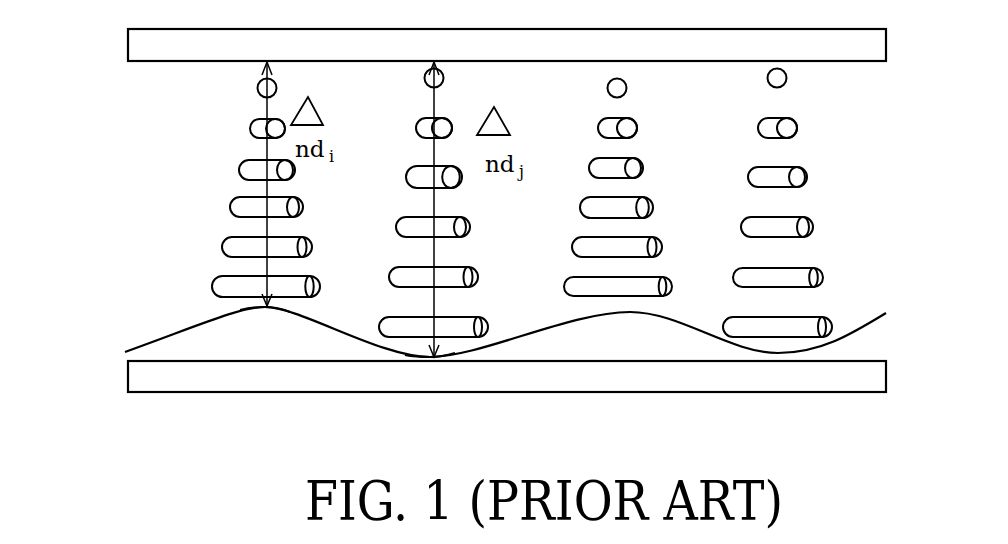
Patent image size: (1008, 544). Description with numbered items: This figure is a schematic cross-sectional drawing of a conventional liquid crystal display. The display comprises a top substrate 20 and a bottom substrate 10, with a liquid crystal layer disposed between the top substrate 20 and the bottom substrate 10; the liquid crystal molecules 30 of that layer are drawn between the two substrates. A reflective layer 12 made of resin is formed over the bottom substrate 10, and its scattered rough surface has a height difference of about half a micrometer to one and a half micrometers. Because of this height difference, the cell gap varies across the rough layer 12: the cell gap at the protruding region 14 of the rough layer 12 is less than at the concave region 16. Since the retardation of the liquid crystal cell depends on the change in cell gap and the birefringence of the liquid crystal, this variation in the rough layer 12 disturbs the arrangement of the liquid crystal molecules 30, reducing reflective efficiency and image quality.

The bottom substrate 10 is at (142, 381).
The reflective layer 12 is at (166, 349).
The protruding region 14 is at (265, 312).
The concave region 16 is at (419, 359).
The top substrate 20 is at (146, 48).
The liquid crystal molecules 30 is at (210, 282).